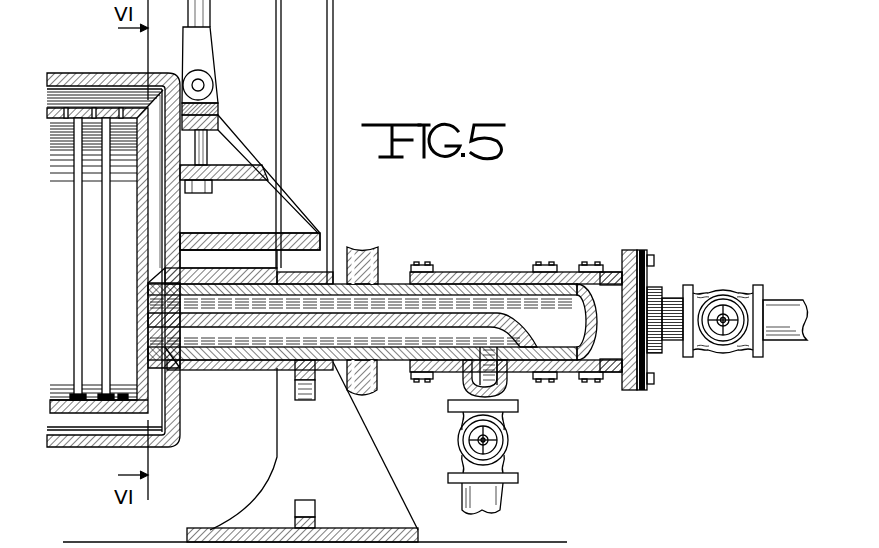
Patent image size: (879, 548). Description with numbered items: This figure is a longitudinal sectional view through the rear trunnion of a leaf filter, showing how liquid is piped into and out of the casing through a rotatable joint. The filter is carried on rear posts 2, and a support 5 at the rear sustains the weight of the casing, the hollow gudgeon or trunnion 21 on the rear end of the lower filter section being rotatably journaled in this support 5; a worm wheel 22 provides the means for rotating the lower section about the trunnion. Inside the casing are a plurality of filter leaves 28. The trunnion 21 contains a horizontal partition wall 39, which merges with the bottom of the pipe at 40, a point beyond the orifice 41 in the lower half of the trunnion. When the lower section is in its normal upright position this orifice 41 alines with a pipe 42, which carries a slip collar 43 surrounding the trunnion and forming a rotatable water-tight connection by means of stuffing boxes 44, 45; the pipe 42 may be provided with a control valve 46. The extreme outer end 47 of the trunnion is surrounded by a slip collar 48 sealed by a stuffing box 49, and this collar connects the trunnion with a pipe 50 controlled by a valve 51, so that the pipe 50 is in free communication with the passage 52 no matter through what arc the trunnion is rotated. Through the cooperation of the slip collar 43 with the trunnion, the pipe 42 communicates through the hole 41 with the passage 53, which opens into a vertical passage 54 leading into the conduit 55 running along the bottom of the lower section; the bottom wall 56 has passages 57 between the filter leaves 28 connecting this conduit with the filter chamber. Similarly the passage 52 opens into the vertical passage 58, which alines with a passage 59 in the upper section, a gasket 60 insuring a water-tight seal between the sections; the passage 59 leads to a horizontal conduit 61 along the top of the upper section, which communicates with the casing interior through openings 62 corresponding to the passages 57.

The rear posts 2 is at (312, 184).
The support 5 is at (295, 371).
The hollow gudgeon or trunnion 21 is at (256, 369).
The worm wheel 22 is at (363, 247).
The filter leaves 28 is at (103, 222).
The horizontal partition wall 39 is at (457, 317).
The merging point 40 is at (533, 347).
The orifice 41 is at (484, 347).
The pipe 42 is at (503, 385).
The slip collar 43 is at (456, 272).
The stuffing box 44 is at (416, 266).
The stuffing box 45 is at (550, 266).
The control valve 46 is at (515, 443).
The extreme outer end of the trunnion 47 is at (640, 288).
The slip collar 48 is at (610, 272).
The stuffing box 49 is at (584, 270).
The pipe 50 is at (672, 310).
The valve 51 is at (722, 293).
The passage 52 is at (393, 303).
The passage 53 is at (400, 362).
The vertical passage 54 is at (162, 400).
The conduit 55 is at (97, 433).
The bottom wall 56 is at (55, 400).
The passages 57 is at (62, 393).
The vertical passage 58 is at (178, 266).
The passage 59 is at (163, 218).
The gasket 60 is at (176, 262).
The horizontal conduit 61 is at (85, 100).
The openings 62 is at (94, 108).